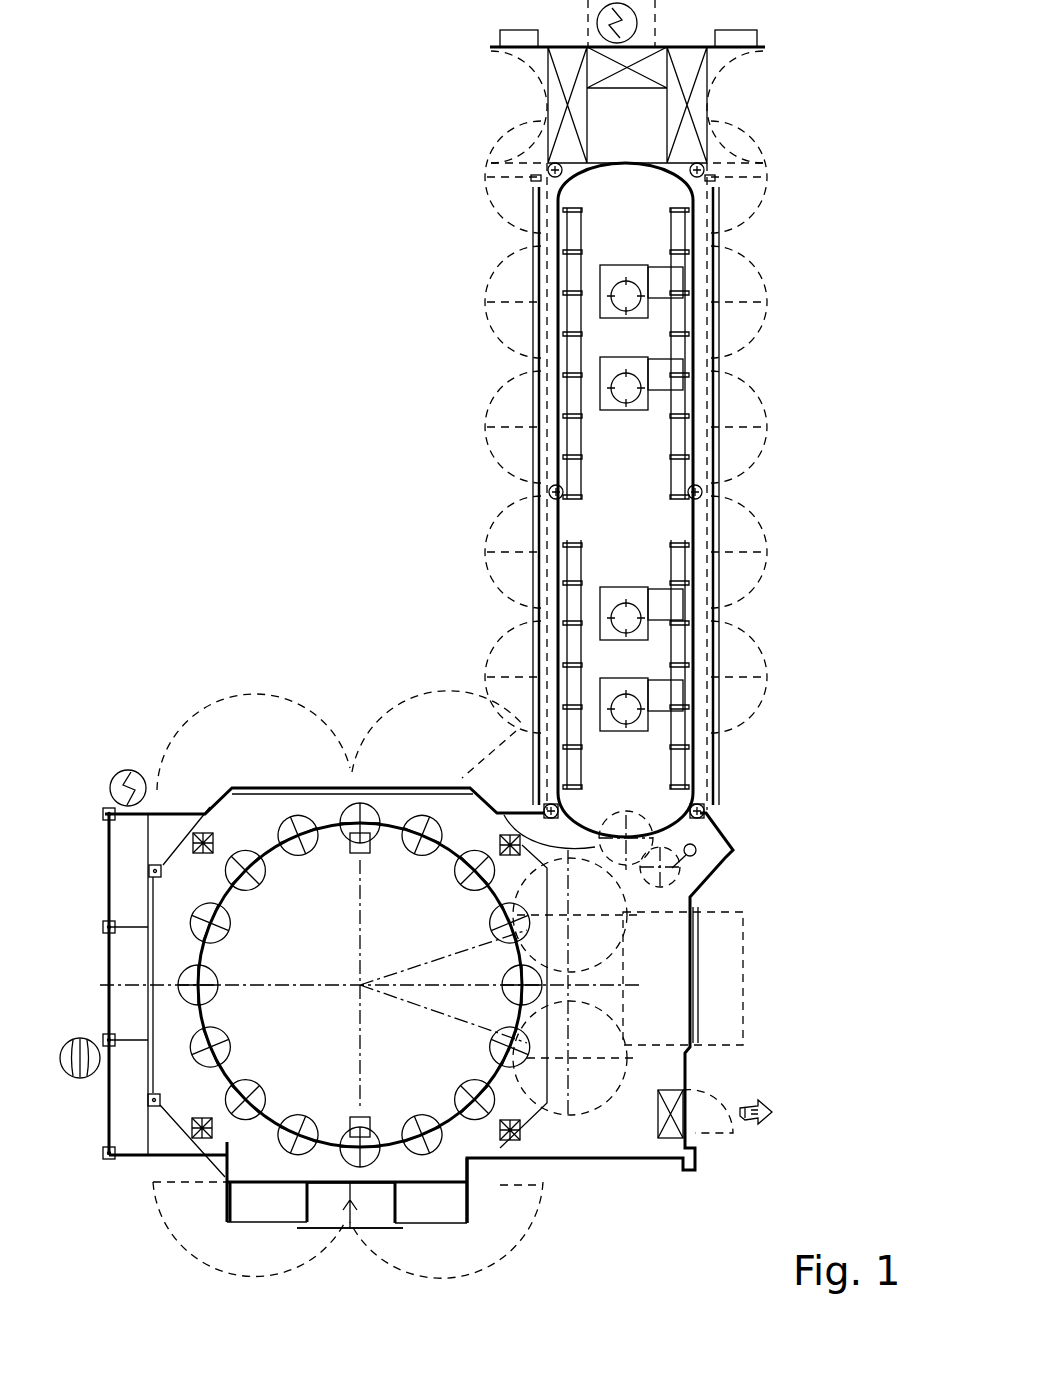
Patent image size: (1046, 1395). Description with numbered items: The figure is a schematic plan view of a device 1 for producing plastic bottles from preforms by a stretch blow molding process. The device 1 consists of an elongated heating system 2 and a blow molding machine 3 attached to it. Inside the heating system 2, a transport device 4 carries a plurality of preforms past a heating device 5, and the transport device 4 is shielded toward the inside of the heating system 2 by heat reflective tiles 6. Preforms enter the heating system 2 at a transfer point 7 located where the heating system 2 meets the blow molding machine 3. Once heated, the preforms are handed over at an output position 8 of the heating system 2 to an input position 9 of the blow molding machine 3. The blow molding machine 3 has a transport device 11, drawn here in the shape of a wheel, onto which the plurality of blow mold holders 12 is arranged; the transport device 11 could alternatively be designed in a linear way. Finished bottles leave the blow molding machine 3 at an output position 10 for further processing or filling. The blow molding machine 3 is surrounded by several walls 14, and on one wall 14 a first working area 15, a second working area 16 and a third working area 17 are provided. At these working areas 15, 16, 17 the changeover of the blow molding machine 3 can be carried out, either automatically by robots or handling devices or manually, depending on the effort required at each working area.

The device 1 is at (355, 497).
The heating system 2 is at (633, 142).
The blow molding machine 3 is at (330, 812).
The transport device 4 is at (693, 365).
The heating device 5 is at (547, 450).
The heat reflective tiles 6 is at (570, 260).
The transfer point 7 is at (672, 857).
The output position 8 is at (504, 815).
The input position 9 is at (597, 945).
The output position 10 is at (587, 1107).
The transport device 11 is at (322, 953).
The blow mold holders 12 is at (230, 1092).
The walls 14 is at (183, 812).
The first working area 15 is at (260, 1205).
The second working area 16 is at (350, 1227).
The third working area 17 is at (442, 1223).